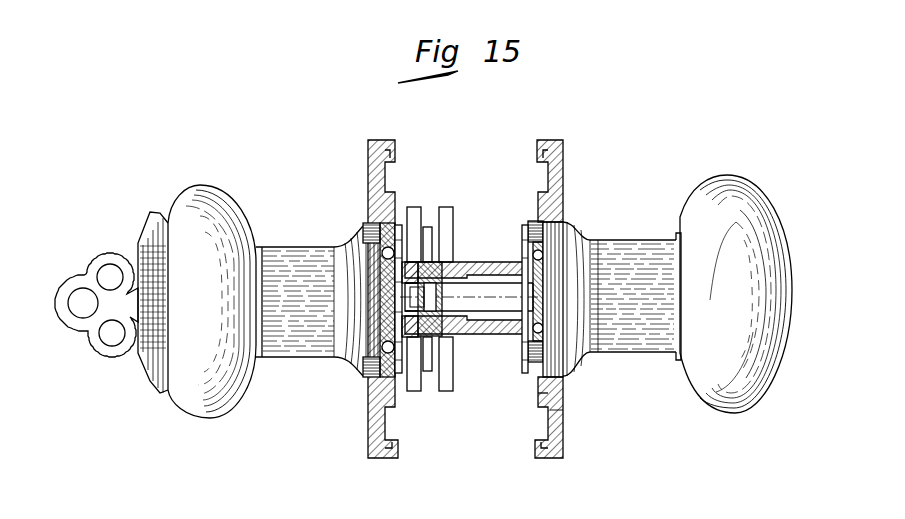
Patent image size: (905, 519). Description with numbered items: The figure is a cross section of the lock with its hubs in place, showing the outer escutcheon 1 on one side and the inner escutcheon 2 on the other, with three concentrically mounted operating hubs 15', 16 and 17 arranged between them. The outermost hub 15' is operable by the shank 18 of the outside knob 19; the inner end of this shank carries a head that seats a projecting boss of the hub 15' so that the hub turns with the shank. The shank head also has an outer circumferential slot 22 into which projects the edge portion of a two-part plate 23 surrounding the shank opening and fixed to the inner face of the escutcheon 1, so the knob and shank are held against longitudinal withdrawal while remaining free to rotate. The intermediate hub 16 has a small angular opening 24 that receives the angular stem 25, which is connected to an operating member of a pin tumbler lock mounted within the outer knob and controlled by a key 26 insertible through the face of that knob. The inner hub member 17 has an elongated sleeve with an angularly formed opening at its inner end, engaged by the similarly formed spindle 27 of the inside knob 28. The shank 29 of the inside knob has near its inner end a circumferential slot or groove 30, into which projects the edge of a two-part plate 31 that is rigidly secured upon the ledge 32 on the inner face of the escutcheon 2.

The outer escutcheon 1 is at (366, 181).
The inner escutcheon 2 is at (565, 168).
The outermost hub 15' is at (437, 260).
The intermediate hub 16 is at (433, 212).
The inner hub member 17 is at (450, 205).
The shank 18 is at (382, 283).
The outside knob 19 is at (287, 330).
The outer circumferential slot 22 is at (386, 262).
The two-part plate 23 is at (410, 203).
The small angular opening 24 is at (430, 340).
The angular stem 25 is at (438, 290).
The key 26 is at (100, 345).
The spindle 27 is at (502, 312).
The inside knob 28 is at (764, 397).
The shank 29 is at (548, 290).
The circumferential slot or groove 30 is at (562, 272).
The two-part plate 31 is at (540, 395).
The ledge 32 is at (563, 390).